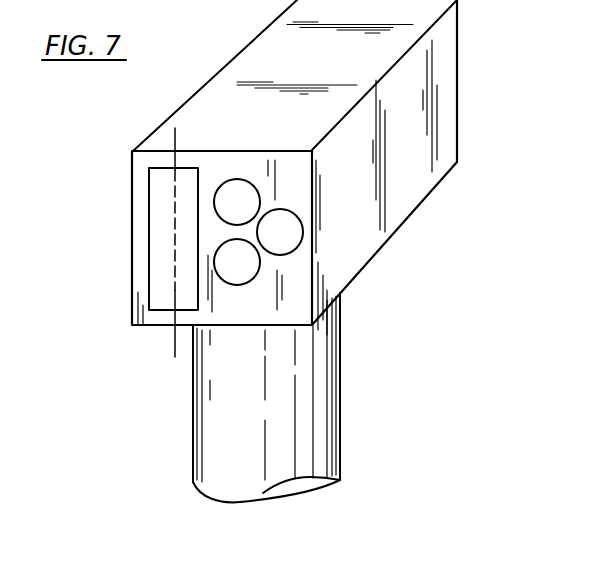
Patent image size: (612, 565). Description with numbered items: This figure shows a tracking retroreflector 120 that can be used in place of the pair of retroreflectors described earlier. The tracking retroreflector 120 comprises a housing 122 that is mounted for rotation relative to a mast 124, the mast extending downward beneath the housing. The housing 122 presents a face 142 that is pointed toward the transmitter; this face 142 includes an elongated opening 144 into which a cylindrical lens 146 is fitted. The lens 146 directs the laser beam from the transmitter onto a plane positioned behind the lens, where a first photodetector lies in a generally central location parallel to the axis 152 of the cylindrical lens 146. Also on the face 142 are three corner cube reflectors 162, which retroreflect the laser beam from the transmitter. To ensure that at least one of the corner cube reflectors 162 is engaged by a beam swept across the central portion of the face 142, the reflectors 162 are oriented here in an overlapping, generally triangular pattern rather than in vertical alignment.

The tracking retroreflector 120 is at (495, 290).
The housing 122 is at (443, 127).
The mast 124 is at (340, 440).
The face 142 is at (146, 316).
The elongated opening 144 is at (203, 177).
The cylindrical lens 146 is at (160, 218).
The axis of the cylindrical lens 152 is at (173, 345).
The corner cube reflectors 162 is at (261, 266).